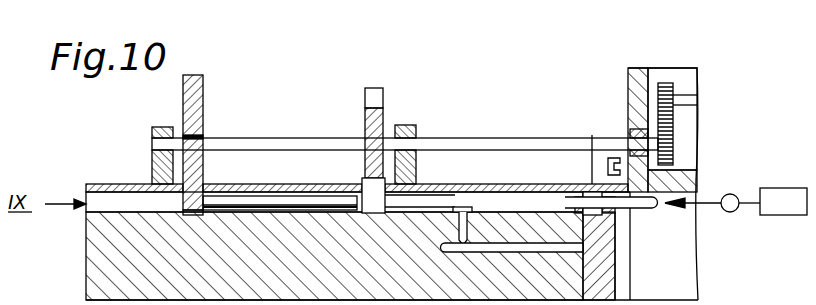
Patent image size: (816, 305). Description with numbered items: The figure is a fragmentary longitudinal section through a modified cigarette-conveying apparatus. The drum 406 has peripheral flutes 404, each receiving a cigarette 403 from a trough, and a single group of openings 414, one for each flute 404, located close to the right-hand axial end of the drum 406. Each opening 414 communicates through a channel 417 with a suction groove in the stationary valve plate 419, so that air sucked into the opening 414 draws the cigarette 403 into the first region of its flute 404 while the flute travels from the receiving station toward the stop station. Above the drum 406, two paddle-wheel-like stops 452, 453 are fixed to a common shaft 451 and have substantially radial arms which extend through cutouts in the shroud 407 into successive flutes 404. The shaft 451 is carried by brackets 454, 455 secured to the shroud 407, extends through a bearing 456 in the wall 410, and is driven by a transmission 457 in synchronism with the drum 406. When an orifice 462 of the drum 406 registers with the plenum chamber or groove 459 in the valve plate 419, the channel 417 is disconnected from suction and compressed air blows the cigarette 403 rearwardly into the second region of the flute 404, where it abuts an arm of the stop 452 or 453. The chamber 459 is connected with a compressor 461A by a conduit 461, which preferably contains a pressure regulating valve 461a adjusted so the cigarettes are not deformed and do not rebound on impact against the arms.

The cigarette 403 is at (262, 198).
The flute 404 is at (95, 207).
The drum 406 is at (102, 245).
The shroud 407 is at (110, 184).
The wall 410 is at (665, 74).
The opening 414 is at (456, 207).
The channel 417 is at (500, 246).
The valve plate 419 is at (603, 279).
The shaft 451 is at (218, 145).
The stop 452 is at (220, 85).
The stop 453 is at (396, 86).
The bracket 454 is at (157, 170).
The bracket 455 is at (418, 128).
The bearing 456 is at (640, 128).
The transmission 457 is at (696, 138).
The plenum chamber 459 is at (592, 145).
The conduit 461 is at (634, 203).
The pressure regulating valve 461a is at (717, 210).
The compressor 461A is at (804, 212).
The orifice 462 is at (590, 200).